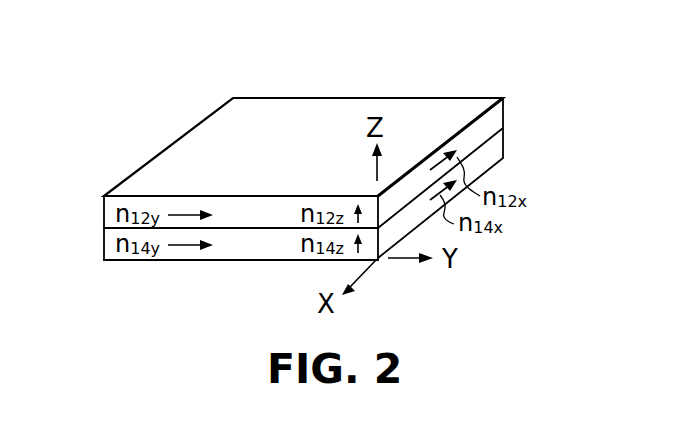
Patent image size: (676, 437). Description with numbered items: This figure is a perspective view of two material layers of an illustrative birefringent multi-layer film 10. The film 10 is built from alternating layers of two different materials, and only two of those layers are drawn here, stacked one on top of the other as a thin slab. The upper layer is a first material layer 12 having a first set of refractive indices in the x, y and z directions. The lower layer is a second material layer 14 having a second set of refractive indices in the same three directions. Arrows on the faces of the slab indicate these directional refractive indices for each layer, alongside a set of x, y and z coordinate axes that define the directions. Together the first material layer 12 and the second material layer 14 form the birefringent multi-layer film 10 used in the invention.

The birefringent multi-layer film 10 is at (332, 134).
The first material layer 12 is at (503, 113).
The second material layer 14 is at (500, 151).